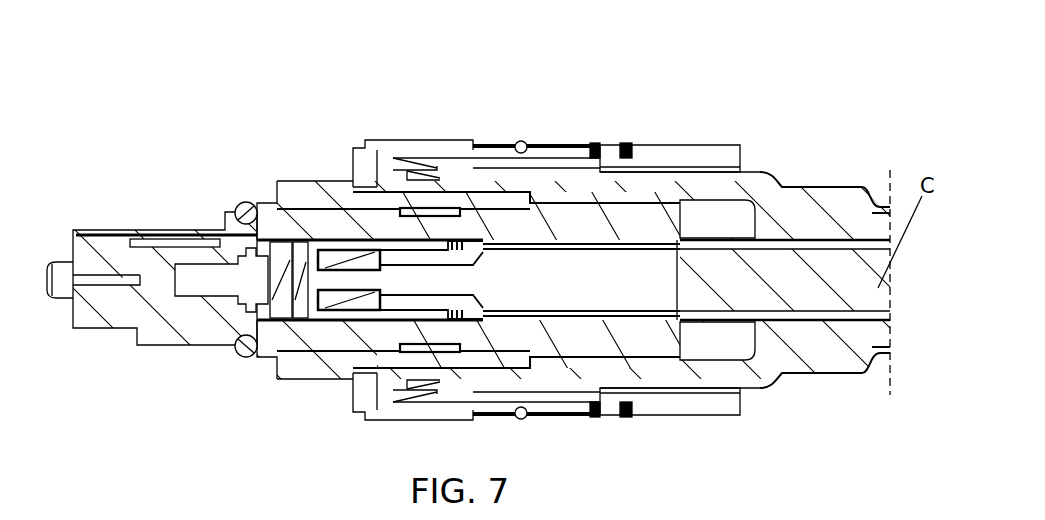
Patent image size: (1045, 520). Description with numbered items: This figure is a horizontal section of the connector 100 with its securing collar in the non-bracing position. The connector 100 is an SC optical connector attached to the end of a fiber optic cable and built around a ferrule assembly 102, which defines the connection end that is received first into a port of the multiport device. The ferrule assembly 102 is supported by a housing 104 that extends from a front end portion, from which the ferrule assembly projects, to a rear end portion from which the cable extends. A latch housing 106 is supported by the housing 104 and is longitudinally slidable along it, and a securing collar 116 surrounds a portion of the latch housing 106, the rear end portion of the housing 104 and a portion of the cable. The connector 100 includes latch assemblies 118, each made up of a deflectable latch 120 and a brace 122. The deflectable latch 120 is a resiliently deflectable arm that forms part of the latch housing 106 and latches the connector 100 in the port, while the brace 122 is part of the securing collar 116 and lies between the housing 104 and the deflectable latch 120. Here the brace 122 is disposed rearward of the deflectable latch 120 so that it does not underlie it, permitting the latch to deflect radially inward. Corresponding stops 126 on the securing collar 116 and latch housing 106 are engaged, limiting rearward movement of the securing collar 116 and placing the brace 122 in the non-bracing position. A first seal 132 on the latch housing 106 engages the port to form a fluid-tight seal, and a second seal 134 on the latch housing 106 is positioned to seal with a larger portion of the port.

The connector 100 is at (676, 75).
The ferrule assembly 102 is at (55, 312).
The housing 104 is at (178, 228).
The latch housing 106 is at (706, 133).
The securing collar 116 is at (790, 183).
The latch assembly 118 is at (455, 130).
The deflectable latch 120 is at (395, 150).
The brace 122 is at (437, 165).
The stops 126 is at (622, 144).
The first seal 132 is at (233, 353).
The second seal 134 is at (522, 142).